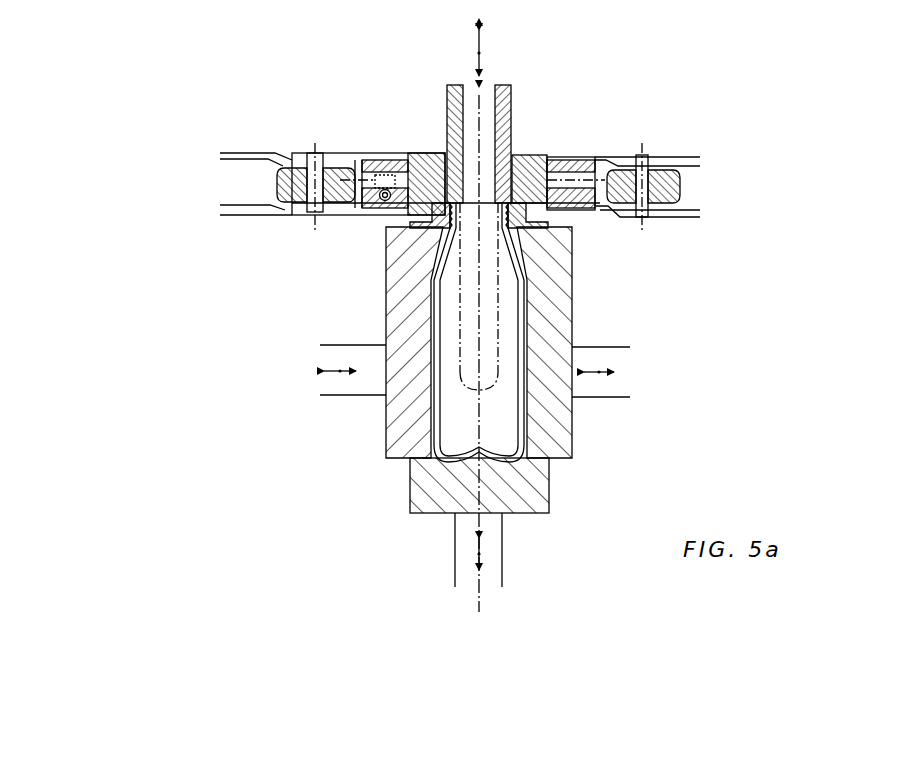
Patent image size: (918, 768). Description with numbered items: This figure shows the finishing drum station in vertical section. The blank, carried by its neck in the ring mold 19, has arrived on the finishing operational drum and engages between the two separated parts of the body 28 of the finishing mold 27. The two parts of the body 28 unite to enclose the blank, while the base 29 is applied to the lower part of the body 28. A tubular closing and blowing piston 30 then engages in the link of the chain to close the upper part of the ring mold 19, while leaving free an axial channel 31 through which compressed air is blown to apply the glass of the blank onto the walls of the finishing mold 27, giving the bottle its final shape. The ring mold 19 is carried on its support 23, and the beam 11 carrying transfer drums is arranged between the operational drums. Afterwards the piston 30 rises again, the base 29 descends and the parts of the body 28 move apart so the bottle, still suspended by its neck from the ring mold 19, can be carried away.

The beam 11 is at (353, 154).
The ring mold 19 is at (397, 270).
The support of the ring mold 23 is at (533, 166).
The finishing mold 27 is at (618, 387).
The body of the finishing mold 28 is at (557, 287).
The base 29 is at (529, 504).
The tubular closing and blowing piston 30 is at (503, 100).
The axial channel 31 is at (484, 96).